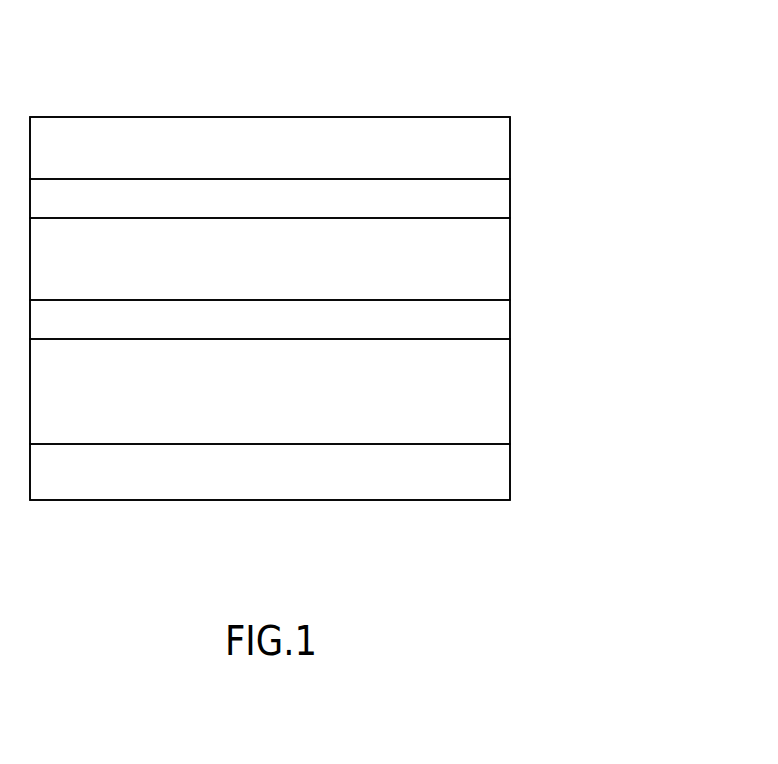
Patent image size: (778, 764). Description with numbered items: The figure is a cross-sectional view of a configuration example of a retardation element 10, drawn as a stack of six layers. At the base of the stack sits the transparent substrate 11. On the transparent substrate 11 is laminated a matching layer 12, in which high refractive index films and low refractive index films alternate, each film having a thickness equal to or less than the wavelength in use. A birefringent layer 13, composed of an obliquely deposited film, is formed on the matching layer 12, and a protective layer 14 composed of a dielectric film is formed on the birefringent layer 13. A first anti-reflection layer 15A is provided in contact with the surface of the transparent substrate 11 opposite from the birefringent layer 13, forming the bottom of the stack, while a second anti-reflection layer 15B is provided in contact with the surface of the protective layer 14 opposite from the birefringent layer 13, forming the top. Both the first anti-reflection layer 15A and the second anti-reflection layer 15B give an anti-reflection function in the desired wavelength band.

The retardation element 10 is at (472, 80).
The second anti-reflection layer 15B is at (510, 149).
The protective layer 14 is at (510, 197).
The birefringent layer 13 is at (510, 258).
The matching layer 12 is at (510, 318).
The transparent substrate 11 is at (510, 392).
The first anti-reflection layer 15A is at (510, 470).